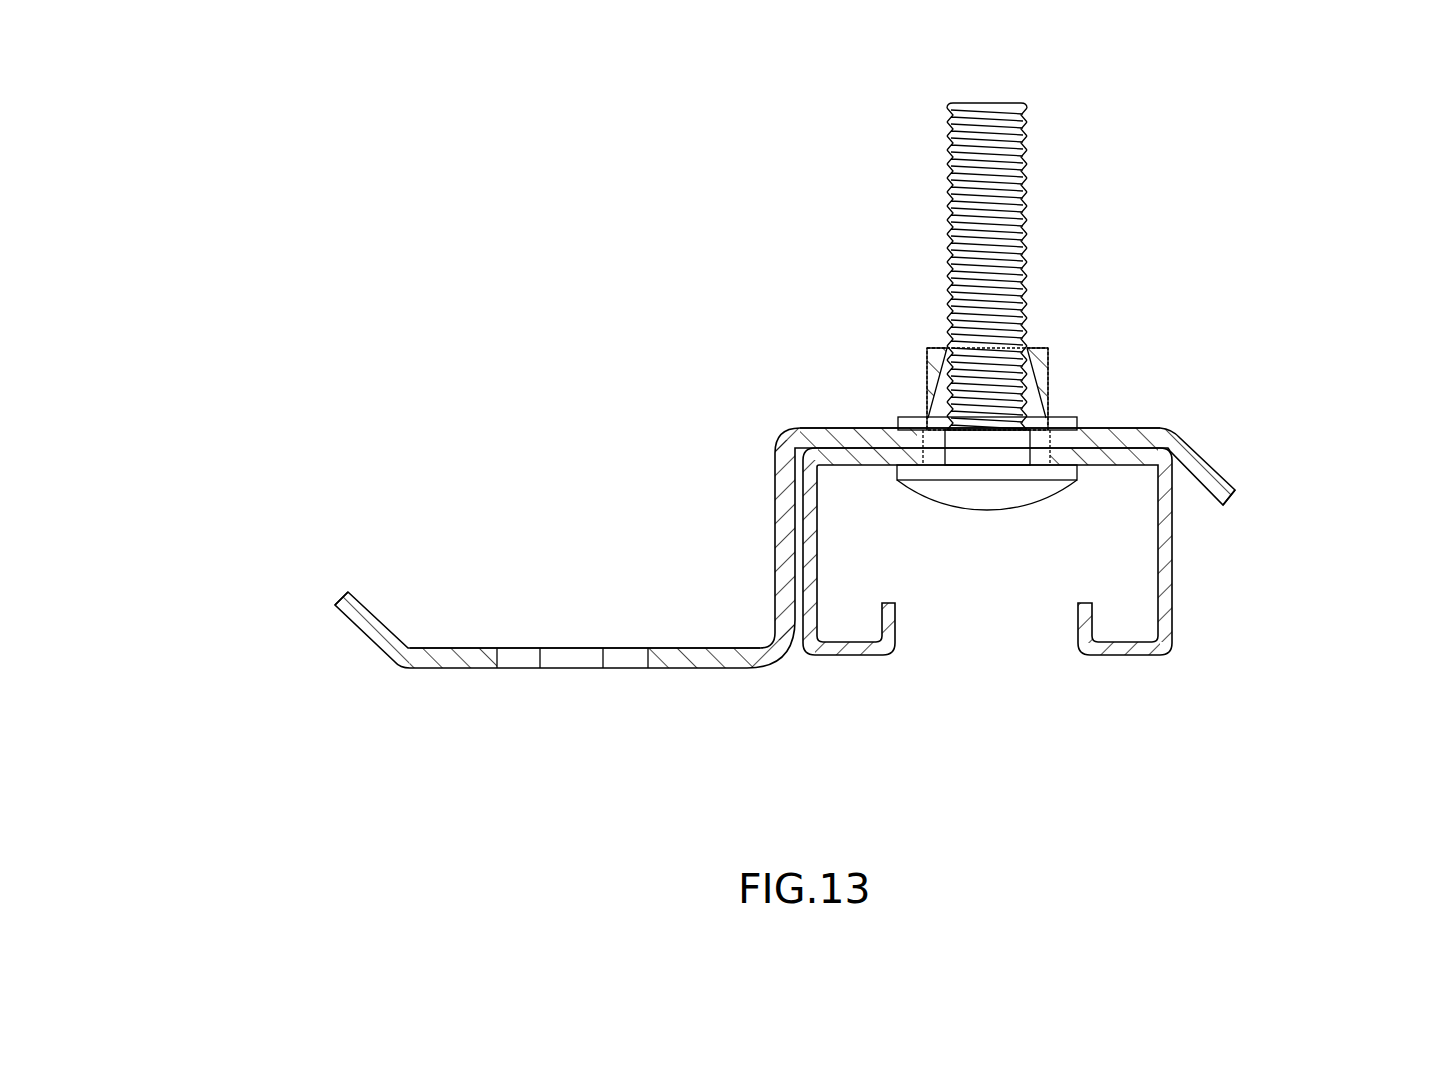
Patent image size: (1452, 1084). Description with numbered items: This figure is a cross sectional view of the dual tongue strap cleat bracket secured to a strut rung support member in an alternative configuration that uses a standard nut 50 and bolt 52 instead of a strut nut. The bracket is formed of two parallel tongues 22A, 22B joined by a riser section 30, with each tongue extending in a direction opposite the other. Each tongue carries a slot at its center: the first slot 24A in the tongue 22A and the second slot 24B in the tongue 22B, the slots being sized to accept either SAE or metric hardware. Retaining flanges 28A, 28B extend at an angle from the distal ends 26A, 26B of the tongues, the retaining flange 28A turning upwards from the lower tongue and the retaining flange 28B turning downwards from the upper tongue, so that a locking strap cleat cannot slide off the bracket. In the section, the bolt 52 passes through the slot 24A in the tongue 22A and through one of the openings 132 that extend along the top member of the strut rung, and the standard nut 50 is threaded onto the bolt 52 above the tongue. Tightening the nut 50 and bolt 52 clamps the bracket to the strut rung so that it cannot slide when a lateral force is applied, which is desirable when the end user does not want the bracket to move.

The tongue 22A is at (1090, 430).
The slot 24A is at (1052, 437).
The distal end 26A is at (1177, 430).
The retaining flange 28A is at (1217, 473).
The tongue 22B is at (455, 648).
The slot 24B is at (587, 662).
The distal end 26B is at (400, 665).
The retaining flange 28B is at (357, 633).
The riser section 30 is at (777, 495).
The standard nut 50 is at (933, 347).
The bolt 52 is at (950, 117).
The openings 132 is at (933, 460).